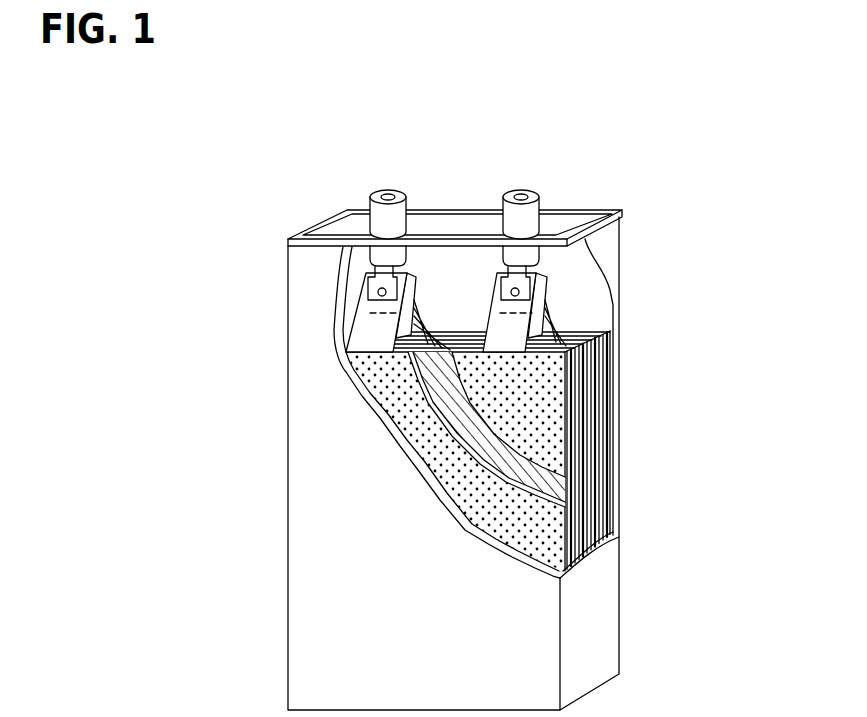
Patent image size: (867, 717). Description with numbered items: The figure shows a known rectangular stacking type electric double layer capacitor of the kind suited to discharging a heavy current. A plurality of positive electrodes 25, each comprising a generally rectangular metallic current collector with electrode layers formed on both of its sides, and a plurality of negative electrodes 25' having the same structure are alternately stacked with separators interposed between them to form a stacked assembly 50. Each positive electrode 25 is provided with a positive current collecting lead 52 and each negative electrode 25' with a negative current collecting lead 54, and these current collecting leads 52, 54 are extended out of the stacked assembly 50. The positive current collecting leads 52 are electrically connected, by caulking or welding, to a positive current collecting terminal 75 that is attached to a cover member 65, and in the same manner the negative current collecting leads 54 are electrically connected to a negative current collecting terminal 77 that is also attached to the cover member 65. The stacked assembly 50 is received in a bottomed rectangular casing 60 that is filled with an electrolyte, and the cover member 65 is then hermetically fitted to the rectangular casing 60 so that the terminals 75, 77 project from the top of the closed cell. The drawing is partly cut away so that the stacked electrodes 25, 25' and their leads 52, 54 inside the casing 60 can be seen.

The bottomed rectangular casing 60 is at (286, 548).
The cover member 65 is at (446, 224).
The positive current collecting terminal 75 is at (390, 269).
The negative current collecting terminal 77 is at (513, 273).
The positive current collecting lead 52 is at (373, 337).
The negative current collecting lead 54 is at (512, 338).
The stacked assembly 50 is at (587, 398).
The negative electrode 25' is at (567, 429).
The positive electrode 25 is at (525, 461).